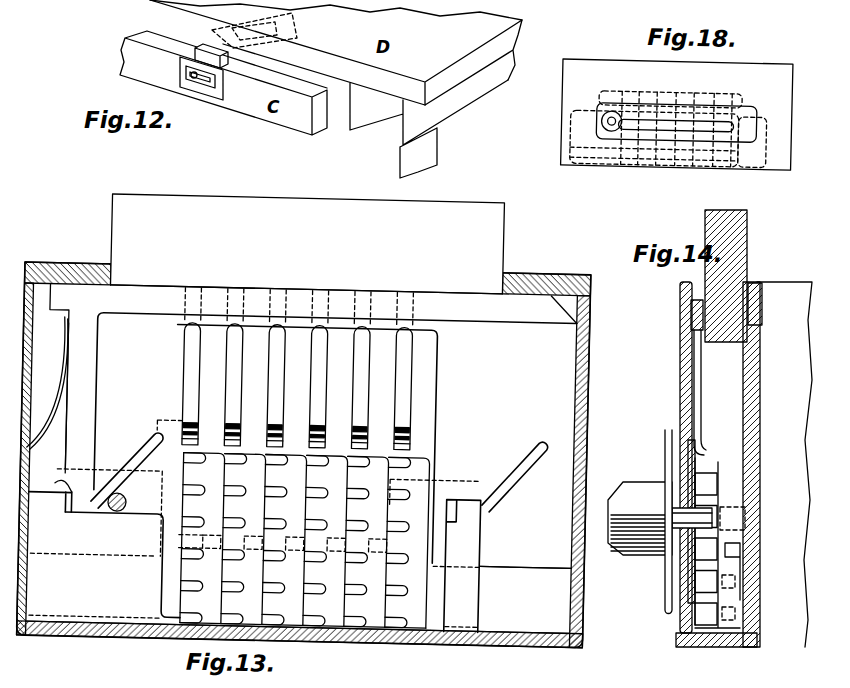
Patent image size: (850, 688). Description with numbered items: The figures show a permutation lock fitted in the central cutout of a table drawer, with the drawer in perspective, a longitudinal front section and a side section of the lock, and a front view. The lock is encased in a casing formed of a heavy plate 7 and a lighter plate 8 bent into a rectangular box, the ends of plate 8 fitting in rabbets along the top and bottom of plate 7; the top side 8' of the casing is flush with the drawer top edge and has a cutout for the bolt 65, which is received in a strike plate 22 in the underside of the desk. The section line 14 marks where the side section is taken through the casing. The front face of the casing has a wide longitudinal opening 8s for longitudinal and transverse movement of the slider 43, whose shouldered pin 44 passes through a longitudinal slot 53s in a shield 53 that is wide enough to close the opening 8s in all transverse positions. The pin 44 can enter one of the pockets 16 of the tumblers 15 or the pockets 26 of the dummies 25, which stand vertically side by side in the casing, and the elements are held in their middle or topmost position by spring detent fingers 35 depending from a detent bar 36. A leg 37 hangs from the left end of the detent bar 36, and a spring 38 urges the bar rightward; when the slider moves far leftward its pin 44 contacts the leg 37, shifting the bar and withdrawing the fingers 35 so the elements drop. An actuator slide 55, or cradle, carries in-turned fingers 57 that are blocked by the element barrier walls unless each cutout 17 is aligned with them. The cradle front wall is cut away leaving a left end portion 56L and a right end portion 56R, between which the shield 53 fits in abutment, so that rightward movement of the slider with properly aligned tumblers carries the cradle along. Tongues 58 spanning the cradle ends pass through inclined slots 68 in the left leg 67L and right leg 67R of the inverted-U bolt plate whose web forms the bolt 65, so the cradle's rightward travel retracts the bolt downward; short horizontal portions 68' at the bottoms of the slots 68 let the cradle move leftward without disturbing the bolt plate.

In FIG. 12, the bolt 65 is at (200, 43).
In FIG. 13, the bolt 65 is at (323, 244).
In FIG. 14, the bolt 65 is at (737, 245).
In FIG. 12, the strike plate 22 is at (297, 25).
In FIG. 12, the top side of the casing 8' is at (180, 78).
In FIG. 14, the top side of the casing 8' is at (762, 288).
In FIG. 14, the lighter plate 8 is at (675, 457).
In FIG. 14, the heavy plate 7 is at (757, 383).
In FIG. 18, the longitudinal opening 8s is at (624, 140).
In FIG. 13, the detent bar 36 is at (305, 324).
In FIG. 14, the detent bar 36 is at (690, 315).
In FIG. 13, the spring detent fingers 35 is at (298, 369).
In FIG. 14, the spring detent fingers 35 is at (700, 410).
In FIG. 13, the leg 37 is at (98, 396).
In FIG. 13, the spring 38 is at (48, 383).
In FIG. 13, the section line 14 is at (317, 410).
In FIG. 13, the tumblers 15 is at (305, 541).
In FIG. 14, the tumblers 15 is at (723, 473).
In FIG. 13, the pockets 16 is at (295, 451).
In FIG. 14, the pockets 16 is at (710, 492).
In FIG. 13, the in-turned fingers 57 is at (295, 526).
In FIG. 14, the in-turned fingers 57 is at (757, 538).
In FIG. 13, the pockets 26 is at (128, 565).
In FIG. 13, the dummies 25 is at (272, 604).
In FIG. 13, the slots 68 is at (319, 466).
In FIG. 13, the short horizontal portions 68' is at (263, 477).
In FIG. 13, the slider pin 44 is at (131, 497).
In FIG. 14, the slider pin 44 is at (700, 518).
In FIG. 13, the tongues 58 is at (278, 561).
In FIG. 13, the left leg 67L is at (95, 582).
In FIG. 13, the right leg 67R is at (525, 585).
In FIG. 18, the left end portion 56L is at (654, 154).
In FIG. 13, the left end portion 56L is at (102, 631).
In FIG. 18, the right end portion 56R is at (764, 142).
In FIG. 13, the right end portion 56R is at (500, 642).
In FIG. 18, the actuator slide 55 is at (676, 144).
In FIG. 13, the actuator slide 55 is at (305, 649).
In FIG. 14, the actuator slide 55 is at (747, 630).
In FIG. 18, the slider 43 is at (567, 117).
In FIG. 14, the slider 43 is at (650, 543).
In FIG. 18, the shield 53 is at (692, 94).
In FIG. 14, the shield 53 is at (672, 583).
In FIG. 18, the longitudinal slot 53s is at (671, 84).
In FIG. 14, the cutout 17 is at (733, 583).